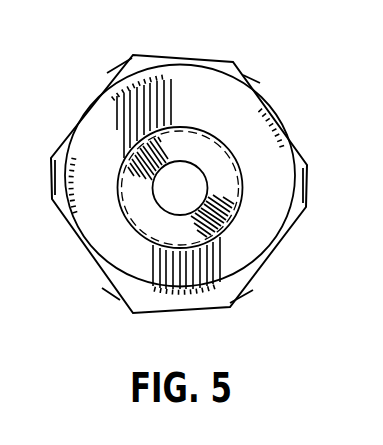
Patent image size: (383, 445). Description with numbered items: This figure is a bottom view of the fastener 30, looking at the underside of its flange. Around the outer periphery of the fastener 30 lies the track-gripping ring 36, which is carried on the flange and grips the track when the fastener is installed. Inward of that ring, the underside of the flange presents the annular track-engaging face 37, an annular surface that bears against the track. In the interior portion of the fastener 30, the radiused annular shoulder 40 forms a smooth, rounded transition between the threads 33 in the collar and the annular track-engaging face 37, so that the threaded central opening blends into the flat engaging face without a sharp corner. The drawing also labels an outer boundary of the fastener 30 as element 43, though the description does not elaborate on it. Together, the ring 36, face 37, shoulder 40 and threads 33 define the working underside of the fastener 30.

The fastener 30 is at (263, 86).
The threads 33 is at (175, 159).
The track-gripping ring 36 is at (81, 234).
The annular track-engaging face 37 is at (260, 168).
The radiused annular shoulder 40 is at (205, 150).
The outer flange 43 is at (282, 256).